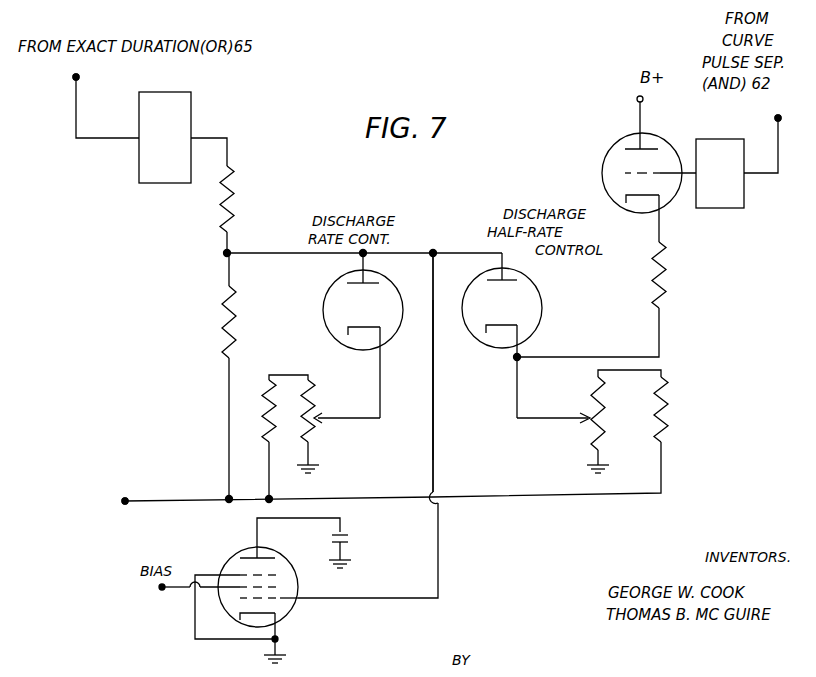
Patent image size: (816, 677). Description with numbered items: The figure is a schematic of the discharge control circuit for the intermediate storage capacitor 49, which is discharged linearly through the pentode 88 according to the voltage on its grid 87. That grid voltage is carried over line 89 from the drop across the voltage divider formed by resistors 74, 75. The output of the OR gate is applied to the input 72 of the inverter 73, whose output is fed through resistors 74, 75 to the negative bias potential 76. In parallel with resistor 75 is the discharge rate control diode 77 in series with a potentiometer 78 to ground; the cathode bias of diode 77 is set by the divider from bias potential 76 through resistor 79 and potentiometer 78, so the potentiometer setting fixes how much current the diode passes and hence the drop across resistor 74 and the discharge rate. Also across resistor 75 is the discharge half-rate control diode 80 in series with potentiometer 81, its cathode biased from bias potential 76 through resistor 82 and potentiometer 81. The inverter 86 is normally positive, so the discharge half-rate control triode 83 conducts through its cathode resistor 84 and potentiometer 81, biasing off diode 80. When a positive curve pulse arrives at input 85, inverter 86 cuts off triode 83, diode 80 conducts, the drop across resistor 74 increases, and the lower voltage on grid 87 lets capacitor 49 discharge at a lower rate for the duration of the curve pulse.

The input 72 is at (79, 77).
The inverter 73 is at (166, 174).
The resistor 74 is at (235, 185).
The resistor 75 is at (222, 310).
The negative bias potential 76 is at (124, 498).
The discharge rate control diode 77 is at (334, 280).
The potentiometer 78 is at (311, 383).
The resistor 79 is at (262, 382).
The discharge half-rate control diode 80 is at (540, 312).
The potentiometer 81 is at (590, 398).
The resistor 82 is at (667, 398).
The discharge half-rate control triode 83 is at (612, 150).
The cathode resistor 84 is at (666, 278).
The input 85 is at (775, 117).
The inverter 86 is at (723, 202).
The grid 87 is at (296, 603).
The pentode 88 is at (262, 551).
The line 89 is at (435, 416).
The intermediate storage capacitor 49 is at (344, 532).